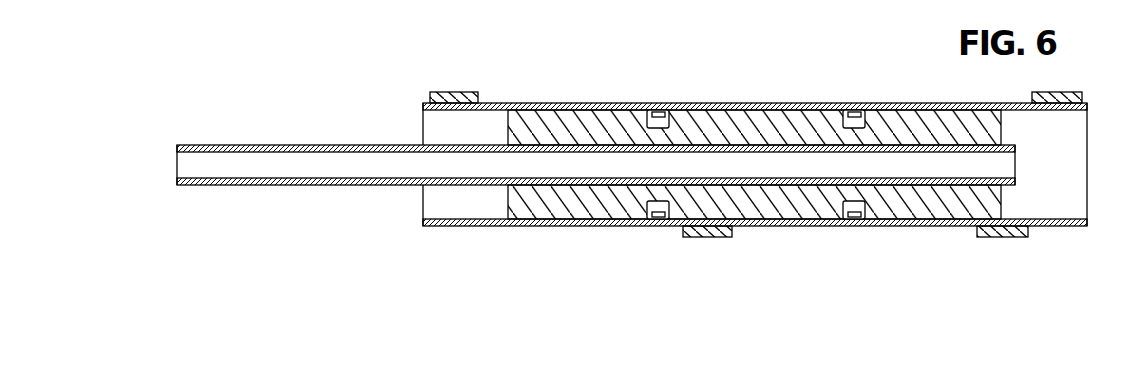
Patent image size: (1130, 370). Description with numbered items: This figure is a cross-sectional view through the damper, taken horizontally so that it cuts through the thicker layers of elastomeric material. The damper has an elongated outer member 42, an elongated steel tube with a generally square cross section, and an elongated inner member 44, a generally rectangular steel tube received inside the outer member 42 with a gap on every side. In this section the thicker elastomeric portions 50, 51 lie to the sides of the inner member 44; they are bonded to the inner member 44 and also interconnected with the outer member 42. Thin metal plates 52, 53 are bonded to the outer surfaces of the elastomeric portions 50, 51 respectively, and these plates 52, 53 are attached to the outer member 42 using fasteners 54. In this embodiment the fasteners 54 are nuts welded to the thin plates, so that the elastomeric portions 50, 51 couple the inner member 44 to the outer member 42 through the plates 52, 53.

The outer member 42 is at (755, 167).
The inner member 44 is at (307, 145).
The elastomeric portion 50 is at (773, 120).
The elastomeric portion 51 is at (790, 208).
The thin metal plate 52 is at (610, 110).
The thin metal plate 53 is at (580, 222).
The fasteners 54 is at (658, 112).